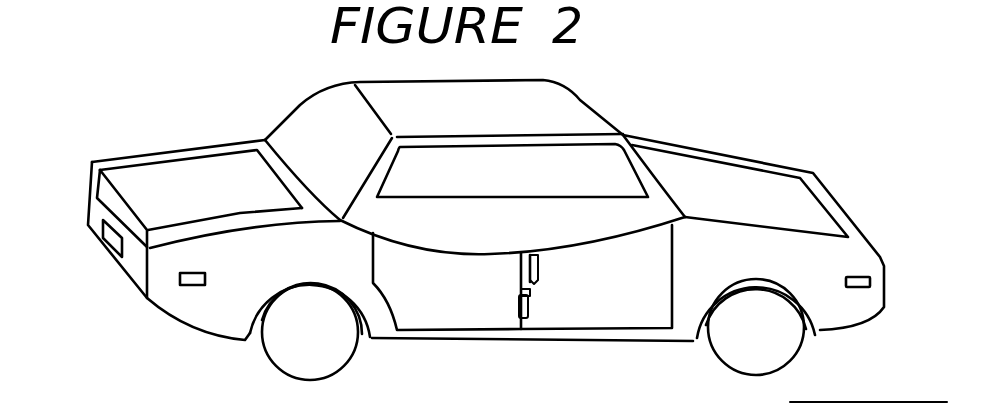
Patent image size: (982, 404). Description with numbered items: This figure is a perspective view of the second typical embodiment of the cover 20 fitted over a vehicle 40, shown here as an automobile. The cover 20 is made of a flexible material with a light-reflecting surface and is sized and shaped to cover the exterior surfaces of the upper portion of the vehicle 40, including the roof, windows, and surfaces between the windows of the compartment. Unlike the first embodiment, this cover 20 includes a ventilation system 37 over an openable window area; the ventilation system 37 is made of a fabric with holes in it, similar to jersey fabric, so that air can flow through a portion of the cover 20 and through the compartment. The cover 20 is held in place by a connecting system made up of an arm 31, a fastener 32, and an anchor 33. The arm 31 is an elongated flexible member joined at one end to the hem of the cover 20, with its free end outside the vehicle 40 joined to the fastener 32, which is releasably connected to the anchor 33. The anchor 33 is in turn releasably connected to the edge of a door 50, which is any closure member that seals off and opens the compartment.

The cover 20 is at (475, 220).
The arm 31 is at (538, 265).
The fastener 32 is at (530, 290).
The anchor 33 is at (528, 308).
The ventilation system 37 is at (537, 170).
The vehicle 40 is at (728, 262).
The door 50 is at (477, 303).